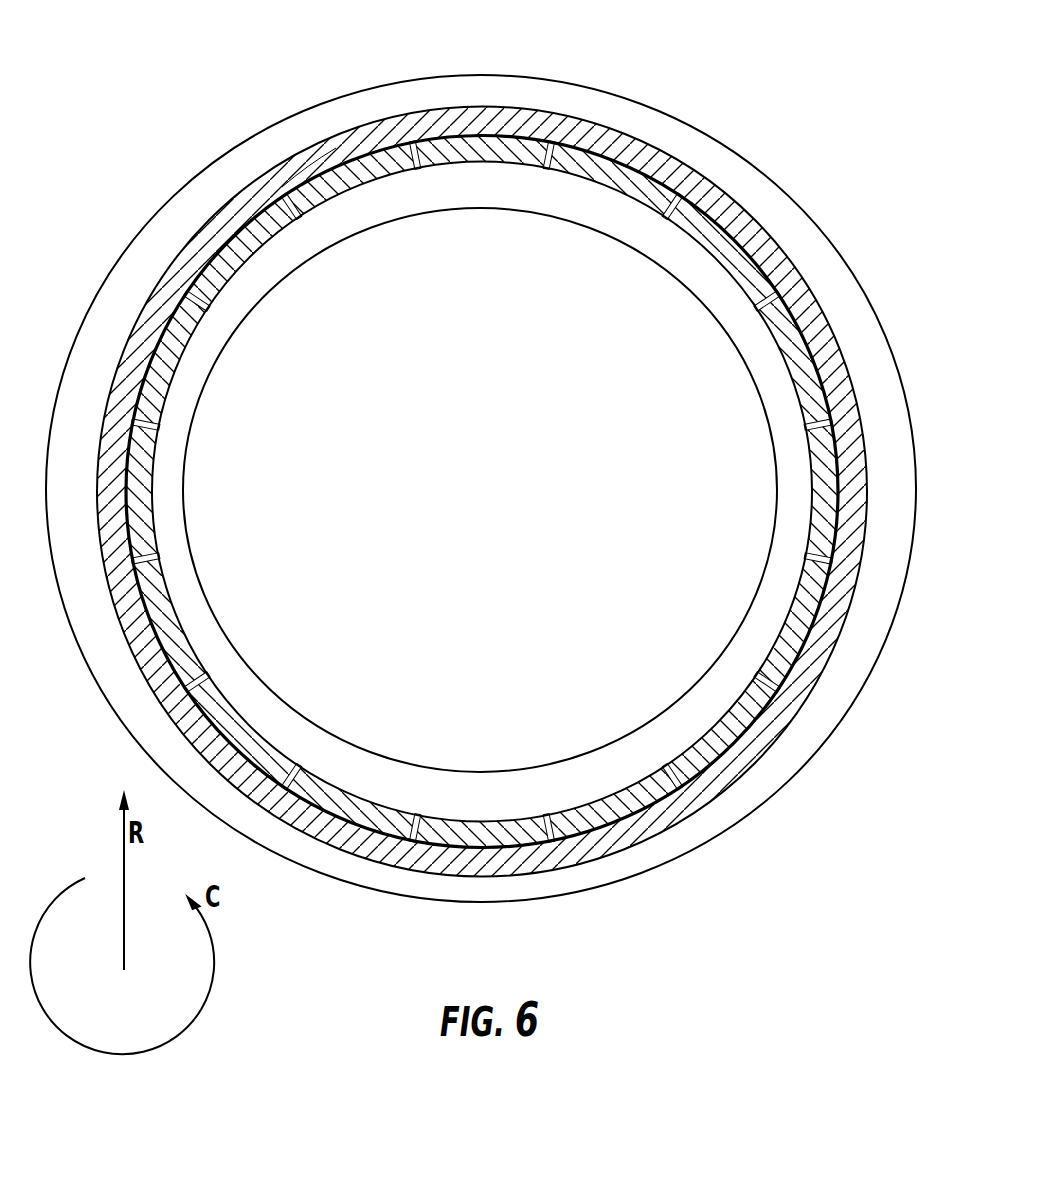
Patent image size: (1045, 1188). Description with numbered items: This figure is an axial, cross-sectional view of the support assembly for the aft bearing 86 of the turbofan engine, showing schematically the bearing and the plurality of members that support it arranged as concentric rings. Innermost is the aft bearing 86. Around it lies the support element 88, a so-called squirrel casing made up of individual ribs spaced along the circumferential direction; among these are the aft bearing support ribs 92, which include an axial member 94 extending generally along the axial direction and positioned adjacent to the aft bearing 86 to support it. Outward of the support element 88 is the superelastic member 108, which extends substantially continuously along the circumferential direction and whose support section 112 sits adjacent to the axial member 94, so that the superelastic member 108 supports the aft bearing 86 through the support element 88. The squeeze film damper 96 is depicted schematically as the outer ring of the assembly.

The aft bearing 86 is at (688, 258).
The support element 88 is at (302, 168).
The aft bearing support ribs 92 is at (605, 160).
The axial member 94 is at (565, 152).
The squeeze film damper 96 is at (740, 188).
The superelastic member 108 is at (453, 110).
The support section 112 is at (508, 118).